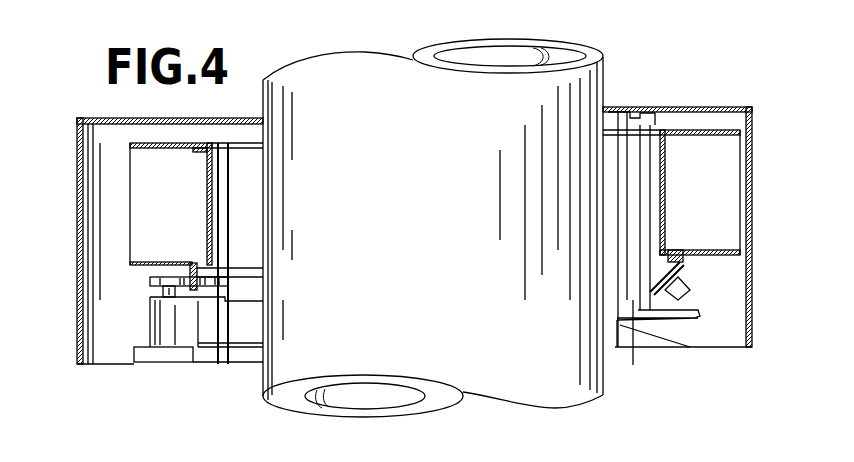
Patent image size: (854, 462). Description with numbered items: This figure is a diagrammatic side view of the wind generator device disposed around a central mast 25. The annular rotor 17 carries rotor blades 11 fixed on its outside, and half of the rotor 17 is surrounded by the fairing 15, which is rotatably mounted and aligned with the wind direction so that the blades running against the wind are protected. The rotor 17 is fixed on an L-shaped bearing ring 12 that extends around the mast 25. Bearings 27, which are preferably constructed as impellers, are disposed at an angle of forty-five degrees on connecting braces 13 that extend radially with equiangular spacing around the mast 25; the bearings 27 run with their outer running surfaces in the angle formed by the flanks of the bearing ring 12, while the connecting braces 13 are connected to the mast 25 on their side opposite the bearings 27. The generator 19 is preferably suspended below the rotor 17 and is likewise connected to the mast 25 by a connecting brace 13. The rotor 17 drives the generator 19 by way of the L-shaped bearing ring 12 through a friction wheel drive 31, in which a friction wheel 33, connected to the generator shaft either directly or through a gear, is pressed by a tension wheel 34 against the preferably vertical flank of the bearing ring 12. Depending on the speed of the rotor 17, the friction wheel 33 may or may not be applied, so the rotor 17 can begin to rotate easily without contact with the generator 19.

The rotor blades 11 is at (132, 190).
The L-shaped bearing ring 12 is at (192, 262).
The connecting braces 13 is at (660, 325).
The fairing 15 is at (78, 190).
The rotor 17 is at (697, 123).
The generator 19 is at (158, 362).
The mast 25 is at (558, 388).
The bearings 27 is at (637, 345).
The friction wheel drive 31 is at (144, 292).
The friction wheel 33 is at (164, 277).
The tension wheel 34 is at (222, 277).